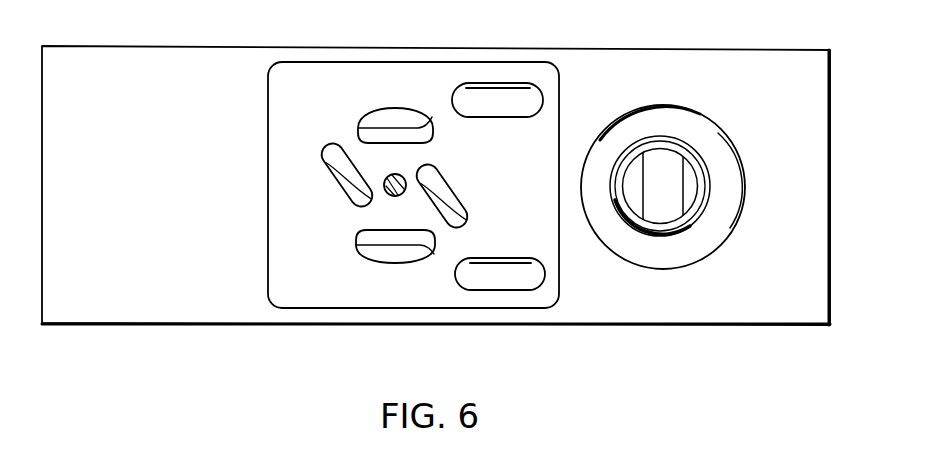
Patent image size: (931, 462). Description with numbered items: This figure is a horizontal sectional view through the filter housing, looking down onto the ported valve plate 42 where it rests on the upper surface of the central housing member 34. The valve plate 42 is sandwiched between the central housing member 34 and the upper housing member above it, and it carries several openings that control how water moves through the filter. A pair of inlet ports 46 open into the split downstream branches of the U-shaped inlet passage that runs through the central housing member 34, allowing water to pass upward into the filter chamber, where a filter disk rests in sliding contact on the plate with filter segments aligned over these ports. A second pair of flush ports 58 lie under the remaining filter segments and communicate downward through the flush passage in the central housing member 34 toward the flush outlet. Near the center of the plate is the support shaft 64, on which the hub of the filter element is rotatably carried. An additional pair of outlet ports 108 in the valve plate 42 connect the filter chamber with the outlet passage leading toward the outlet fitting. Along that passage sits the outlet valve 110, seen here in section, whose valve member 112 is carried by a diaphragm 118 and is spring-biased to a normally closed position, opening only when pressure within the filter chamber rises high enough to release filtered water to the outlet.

The central housing member 34 is at (92, 305).
The ported valve plate 42 is at (338, 75).
The inlet ports 46 is at (398, 107).
The flush ports 58 is at (332, 165).
The support shaft 64 is at (392, 196).
The outlet ports 108 is at (498, 88).
The outlet valve 110 is at (657, 123).
The valve member 112 is at (678, 160).
The diaphragm 118 is at (718, 135).